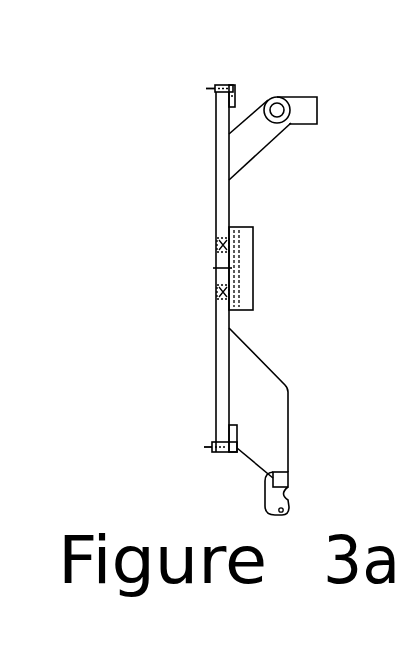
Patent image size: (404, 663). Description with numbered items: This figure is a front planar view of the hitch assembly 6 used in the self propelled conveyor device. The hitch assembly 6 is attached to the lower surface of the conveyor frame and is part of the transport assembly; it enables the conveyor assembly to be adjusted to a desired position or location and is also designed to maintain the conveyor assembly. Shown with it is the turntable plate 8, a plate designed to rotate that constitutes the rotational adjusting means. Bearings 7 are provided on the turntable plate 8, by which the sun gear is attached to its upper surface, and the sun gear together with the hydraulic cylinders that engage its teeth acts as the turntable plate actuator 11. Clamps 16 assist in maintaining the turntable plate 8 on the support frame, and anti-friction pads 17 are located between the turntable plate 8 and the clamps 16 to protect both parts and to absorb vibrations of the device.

The hitch assembly 6 is at (322, 102).
The bearings 7 is at (217, 290).
The turntable plate 8 is at (217, 200).
The turntable plate actuator 11 is at (258, 246).
The clamps 16 is at (236, 102).
The anti-friction pads 17 is at (230, 436).